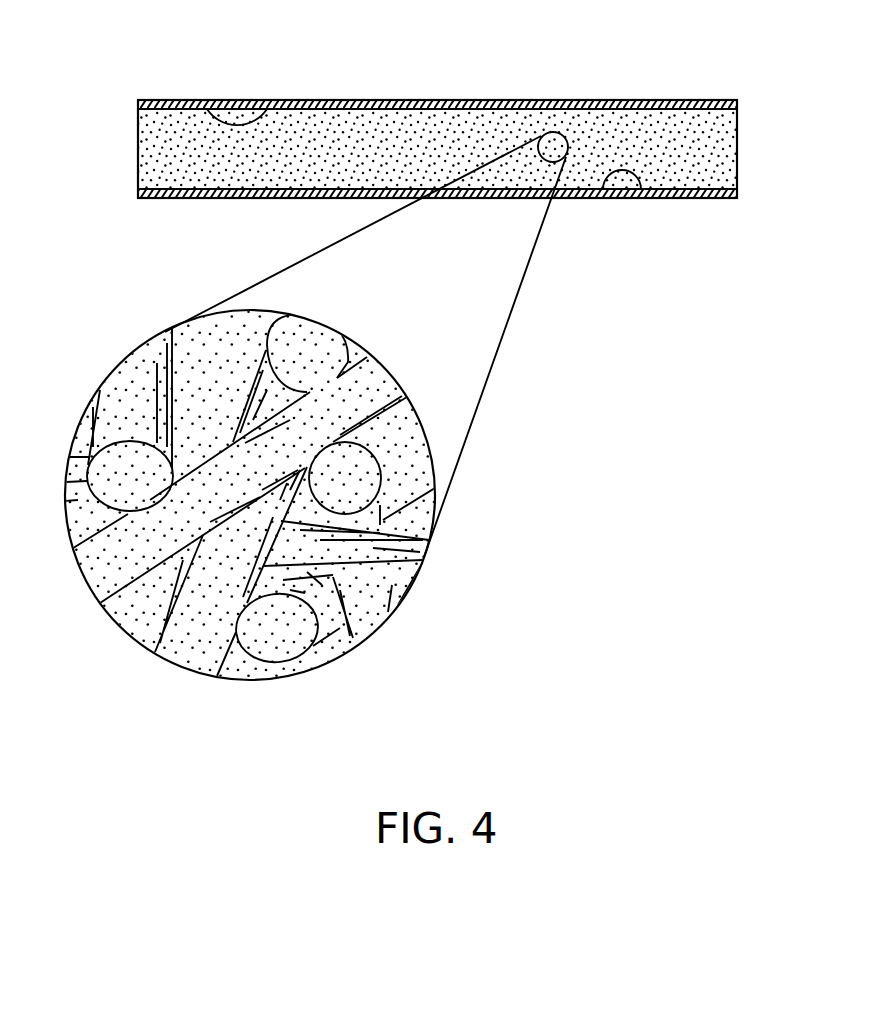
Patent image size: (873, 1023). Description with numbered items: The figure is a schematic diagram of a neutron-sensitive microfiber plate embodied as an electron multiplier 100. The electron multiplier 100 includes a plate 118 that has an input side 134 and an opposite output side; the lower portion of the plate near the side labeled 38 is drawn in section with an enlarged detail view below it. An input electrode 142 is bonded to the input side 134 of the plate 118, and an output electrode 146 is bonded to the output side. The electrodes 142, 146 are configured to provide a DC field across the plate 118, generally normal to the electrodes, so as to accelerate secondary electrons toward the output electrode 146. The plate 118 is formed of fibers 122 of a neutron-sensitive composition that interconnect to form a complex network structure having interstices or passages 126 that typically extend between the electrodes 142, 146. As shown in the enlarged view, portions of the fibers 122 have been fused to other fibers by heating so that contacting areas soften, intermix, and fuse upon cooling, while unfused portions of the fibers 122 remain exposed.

The electron multiplier 100 is at (470, 136).
The plate 118 is at (745, 106).
The input electrode 142 is at (668, 100).
The output electrode 146 is at (300, 198).
The input side 134 is at (270, 109).
The lower region of core 38 is at (641, 189).
The fibers 122 is at (360, 472).
The interstices or passages 126 is at (327, 533).